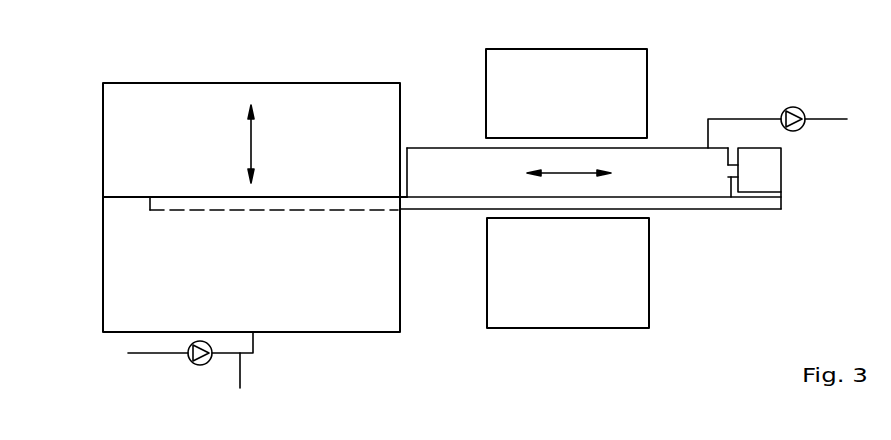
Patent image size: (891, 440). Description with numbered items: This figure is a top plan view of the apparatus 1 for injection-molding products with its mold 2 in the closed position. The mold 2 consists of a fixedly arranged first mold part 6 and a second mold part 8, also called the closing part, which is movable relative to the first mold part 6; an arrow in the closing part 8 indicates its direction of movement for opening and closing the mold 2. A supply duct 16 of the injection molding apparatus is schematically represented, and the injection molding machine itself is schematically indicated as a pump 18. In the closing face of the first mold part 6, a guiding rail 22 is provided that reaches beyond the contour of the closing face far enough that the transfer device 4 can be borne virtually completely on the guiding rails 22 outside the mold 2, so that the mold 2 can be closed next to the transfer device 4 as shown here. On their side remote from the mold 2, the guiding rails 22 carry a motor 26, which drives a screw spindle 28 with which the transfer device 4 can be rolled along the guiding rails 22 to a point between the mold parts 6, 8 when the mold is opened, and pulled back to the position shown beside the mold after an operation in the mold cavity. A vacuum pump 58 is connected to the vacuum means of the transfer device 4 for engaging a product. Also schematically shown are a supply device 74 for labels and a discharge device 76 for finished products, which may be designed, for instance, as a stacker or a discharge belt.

The apparatus 1 is at (727, 54).
The mold 2 is at (84, 252).
The transfer device 4 is at (683, 148).
The first mold part 6 is at (103, 298).
The second mold part 8 is at (102, 127).
The supply duct 16 is at (240, 387).
The pump 18 is at (192, 368).
The guiding rail 22 is at (697, 210).
The motor 26 is at (783, 169).
The screw spindle 28 is at (733, 177).
The vacuum pump 58 is at (801, 110).
The supply device 74 is at (486, 66).
The discharge device 76 is at (570, 328).